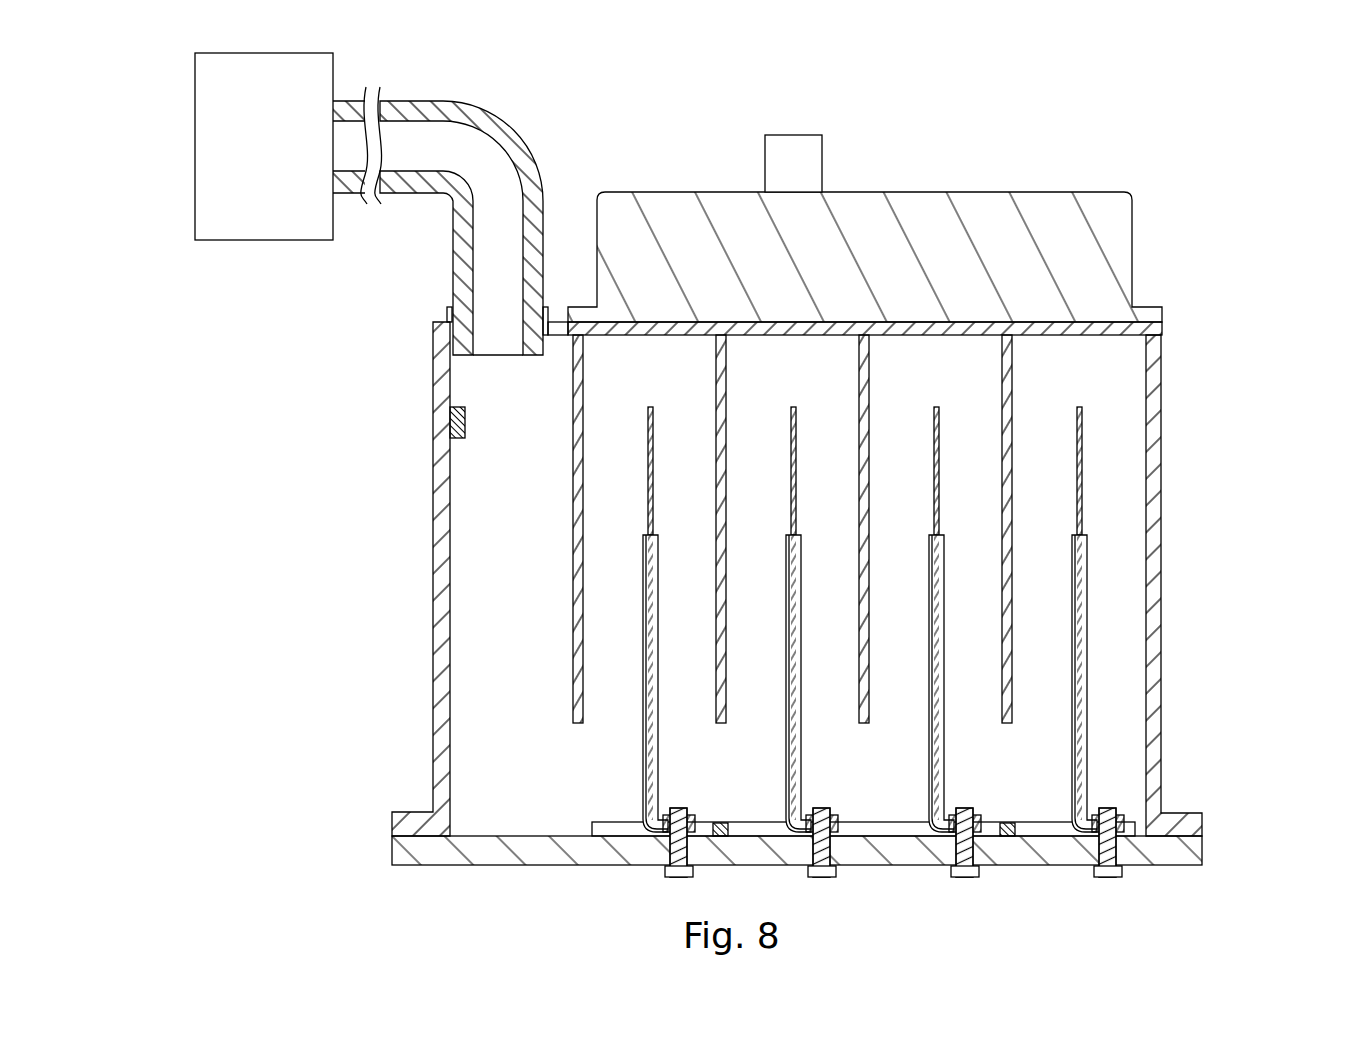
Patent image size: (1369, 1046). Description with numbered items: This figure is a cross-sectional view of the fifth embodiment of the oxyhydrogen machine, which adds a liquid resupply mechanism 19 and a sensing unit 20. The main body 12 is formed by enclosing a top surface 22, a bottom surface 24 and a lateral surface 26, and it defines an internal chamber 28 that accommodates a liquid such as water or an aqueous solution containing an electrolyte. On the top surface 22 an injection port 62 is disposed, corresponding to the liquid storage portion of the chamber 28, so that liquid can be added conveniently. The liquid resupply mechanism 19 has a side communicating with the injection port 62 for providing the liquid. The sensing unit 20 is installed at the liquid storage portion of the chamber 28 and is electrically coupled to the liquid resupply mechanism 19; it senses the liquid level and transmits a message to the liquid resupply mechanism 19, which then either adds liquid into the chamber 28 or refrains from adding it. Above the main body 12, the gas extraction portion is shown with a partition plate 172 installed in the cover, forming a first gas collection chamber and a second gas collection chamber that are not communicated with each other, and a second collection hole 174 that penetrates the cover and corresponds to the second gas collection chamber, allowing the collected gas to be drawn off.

The main body 12 is at (811, 488).
The liquid resupply mechanism 19 is at (220, 146).
The sensing unit 20 is at (447, 428).
The top surface 22 is at (563, 332).
The bottom surface 24 is at (1170, 855).
The lateral surface 26 is at (1170, 405).
The chamber 28 is at (614, 709).
The injection port 62 is at (448, 323).
The partition plate 172 is at (973, 220).
The second collection hole 174 is at (797, 148).